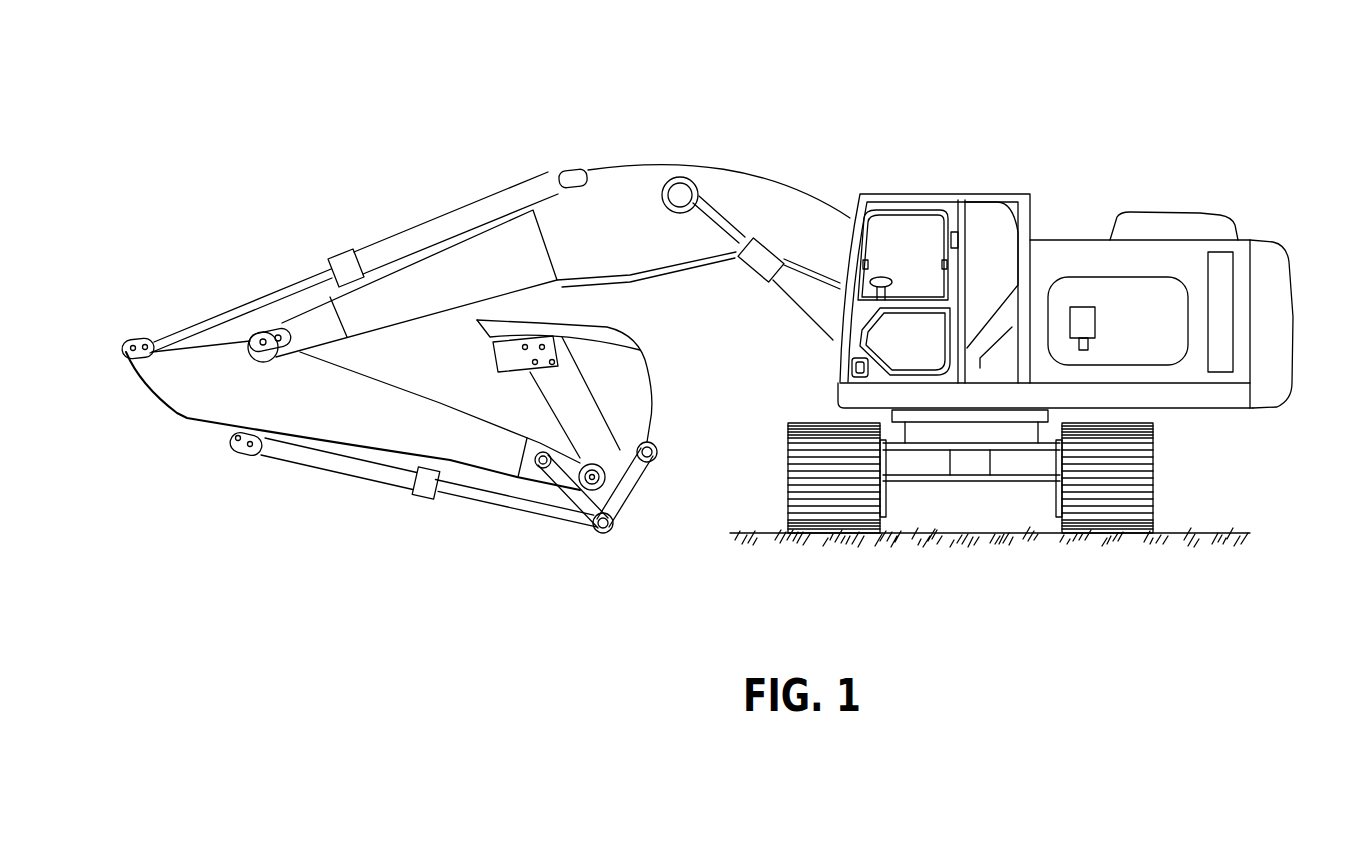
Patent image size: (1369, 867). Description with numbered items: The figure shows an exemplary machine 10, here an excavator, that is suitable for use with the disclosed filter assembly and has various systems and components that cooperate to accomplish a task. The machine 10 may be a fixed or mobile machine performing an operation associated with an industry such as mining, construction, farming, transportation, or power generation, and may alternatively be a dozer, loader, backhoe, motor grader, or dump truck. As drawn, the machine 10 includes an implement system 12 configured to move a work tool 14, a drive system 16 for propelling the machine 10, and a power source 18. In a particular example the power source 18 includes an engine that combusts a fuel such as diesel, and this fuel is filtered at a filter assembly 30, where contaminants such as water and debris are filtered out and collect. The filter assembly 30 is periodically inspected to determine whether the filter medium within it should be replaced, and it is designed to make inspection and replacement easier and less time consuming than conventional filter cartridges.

The machine 10 is at (1163, 110).
The implement system 12 is at (606, 166).
The work tool 14 is at (649, 364).
The drive system 16 is at (1298, 408).
The power source 18 is at (1078, 278).
The filter assembly 30 is at (1097, 320).